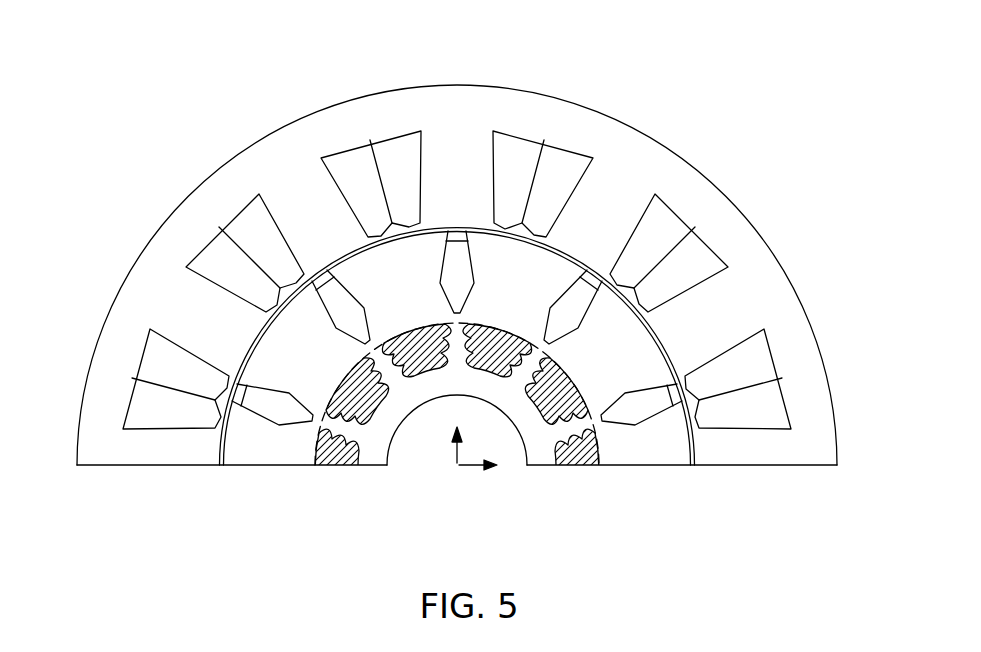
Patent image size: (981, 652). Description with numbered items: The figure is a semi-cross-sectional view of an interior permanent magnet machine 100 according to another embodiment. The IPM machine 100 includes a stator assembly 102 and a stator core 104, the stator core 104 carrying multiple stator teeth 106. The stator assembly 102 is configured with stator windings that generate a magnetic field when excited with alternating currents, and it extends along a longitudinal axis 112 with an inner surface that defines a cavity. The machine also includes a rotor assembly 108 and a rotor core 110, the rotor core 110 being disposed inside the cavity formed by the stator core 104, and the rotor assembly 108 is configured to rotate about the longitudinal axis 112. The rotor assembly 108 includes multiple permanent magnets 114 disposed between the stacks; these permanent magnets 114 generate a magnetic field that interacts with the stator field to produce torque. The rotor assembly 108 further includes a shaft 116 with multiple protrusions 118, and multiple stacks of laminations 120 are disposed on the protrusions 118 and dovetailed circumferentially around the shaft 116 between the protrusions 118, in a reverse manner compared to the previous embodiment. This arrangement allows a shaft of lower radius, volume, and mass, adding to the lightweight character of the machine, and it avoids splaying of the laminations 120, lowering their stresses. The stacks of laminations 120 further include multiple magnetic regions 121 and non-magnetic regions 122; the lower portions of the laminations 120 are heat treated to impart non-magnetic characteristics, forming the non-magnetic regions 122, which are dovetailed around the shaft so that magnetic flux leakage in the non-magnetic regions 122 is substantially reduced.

The IPM machine 100 is at (758, 64).
The stator assembly 102 is at (561, 166).
The stator core 104 is at (768, 455).
The stator teeth 106 is at (455, 160).
The rotor assembly 108 is at (300, 415).
The rotor core 110 is at (244, 455).
The longitudinal axis 112 is at (457, 470).
The permanent magnets 114 is at (548, 325).
The shaft 116 is at (383, 455).
The protrusions 118 is at (432, 340).
The stacks of laminations 120 is at (290, 355).
The magnetic regions 121 is at (652, 455).
The non-magnetic regions 122 is at (505, 352).